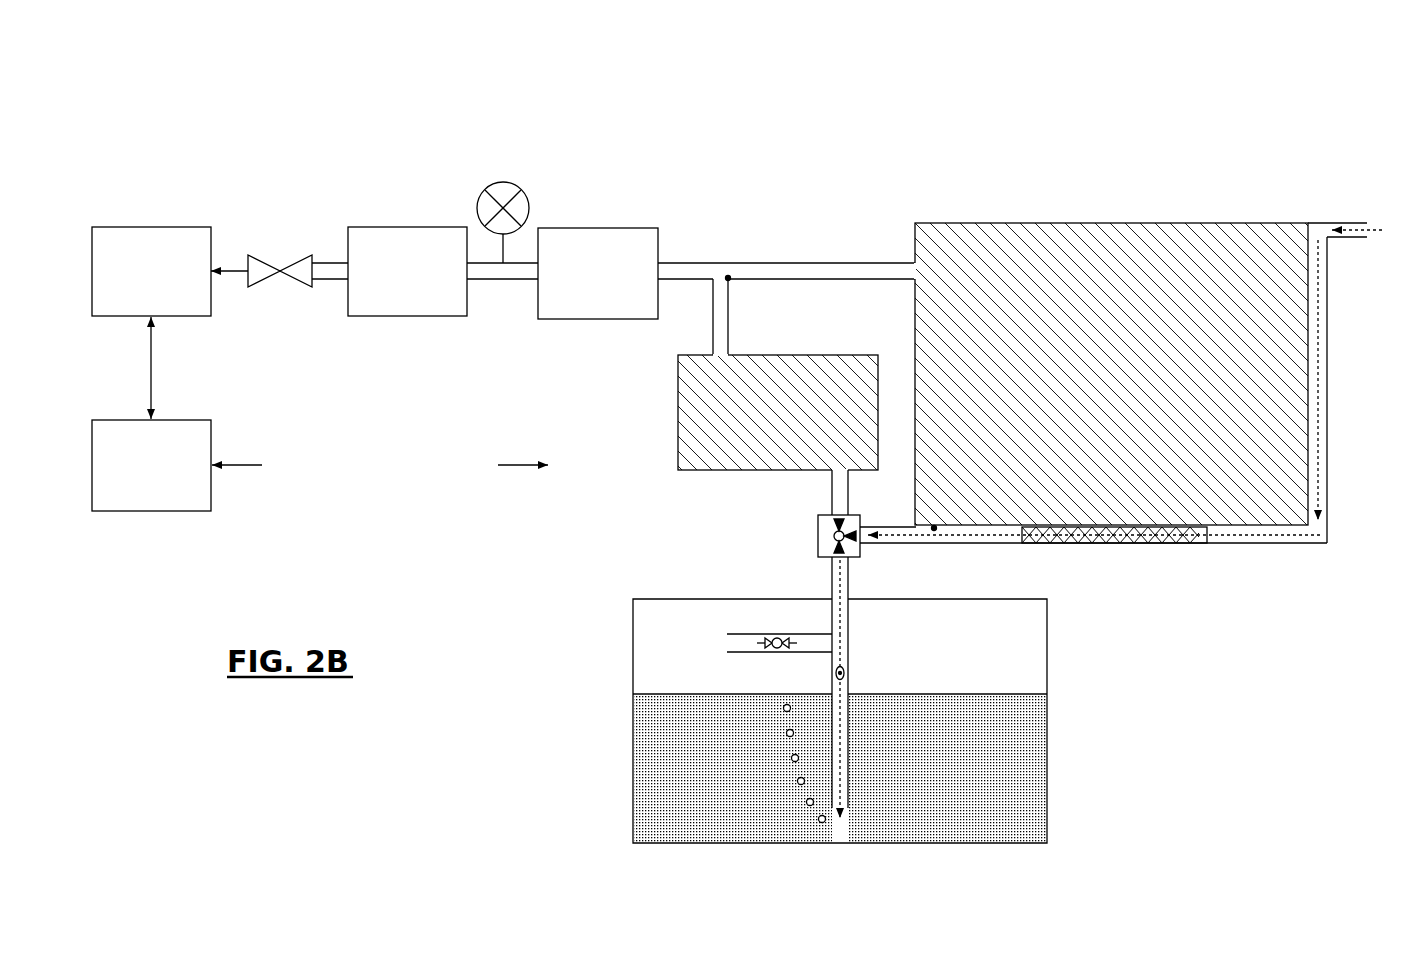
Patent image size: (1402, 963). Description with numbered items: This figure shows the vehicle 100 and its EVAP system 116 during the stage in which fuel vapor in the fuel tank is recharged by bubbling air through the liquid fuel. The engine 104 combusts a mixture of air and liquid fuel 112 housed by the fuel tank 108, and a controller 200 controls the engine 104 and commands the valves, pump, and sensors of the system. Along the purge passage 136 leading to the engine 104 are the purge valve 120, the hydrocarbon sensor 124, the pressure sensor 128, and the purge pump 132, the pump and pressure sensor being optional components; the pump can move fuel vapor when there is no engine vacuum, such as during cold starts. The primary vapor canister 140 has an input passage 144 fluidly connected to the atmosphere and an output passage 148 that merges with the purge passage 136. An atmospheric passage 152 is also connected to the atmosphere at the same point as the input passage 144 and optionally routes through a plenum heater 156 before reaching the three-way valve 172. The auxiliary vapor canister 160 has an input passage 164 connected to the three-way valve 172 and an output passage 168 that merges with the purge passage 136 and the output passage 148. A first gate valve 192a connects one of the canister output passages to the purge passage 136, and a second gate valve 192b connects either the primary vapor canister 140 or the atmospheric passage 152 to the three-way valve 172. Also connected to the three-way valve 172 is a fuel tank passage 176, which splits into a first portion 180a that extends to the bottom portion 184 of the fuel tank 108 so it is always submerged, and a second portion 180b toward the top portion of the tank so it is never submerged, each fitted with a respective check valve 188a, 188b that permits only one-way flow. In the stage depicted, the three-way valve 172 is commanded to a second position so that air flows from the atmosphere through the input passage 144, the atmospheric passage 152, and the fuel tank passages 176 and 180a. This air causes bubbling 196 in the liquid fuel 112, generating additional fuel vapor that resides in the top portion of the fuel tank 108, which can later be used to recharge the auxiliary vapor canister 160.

The vehicle 100 is at (212, 102).
The engine 104 is at (151, 227).
The fuel tank 108 is at (1049, 647).
The liquid fuel 112 is at (1029, 776).
The EVAP system 116 is at (546, 577).
The purge valve 120 is at (280, 288).
The hydrocarbon sensor 124 is at (407, 317).
The pressure sensor 128 is at (503, 182).
The purge pump 132 is at (598, 320).
The purge passage 136 is at (503, 280).
The primary vapor canister 140 is at (1112, 222).
The input passage 144 is at (1346, 222).
The output passage 148 is at (820, 262).
The atmospheric passage 152 is at (1328, 390).
The plenum heater 156 is at (1125, 544).
The auxiliary vapor canister 160 is at (678, 448).
The input passage 164 is at (831, 484).
The output passage 168 is at (729, 318).
The three-way valve 172 is at (817, 540).
The fuel tank passage 176 is at (849, 612).
The first portion 180a is at (849, 727).
The second portion 180b is at (738, 633).
The bottom portion 184 is at (847, 808).
The check valve 188a is at (847, 674).
The check valve 188b is at (777, 650).
The first gate valve 192a is at (728, 276).
The second gate valve 192b is at (935, 529).
The bubbling 196 is at (782, 779).
The controller 200 is at (151, 512).